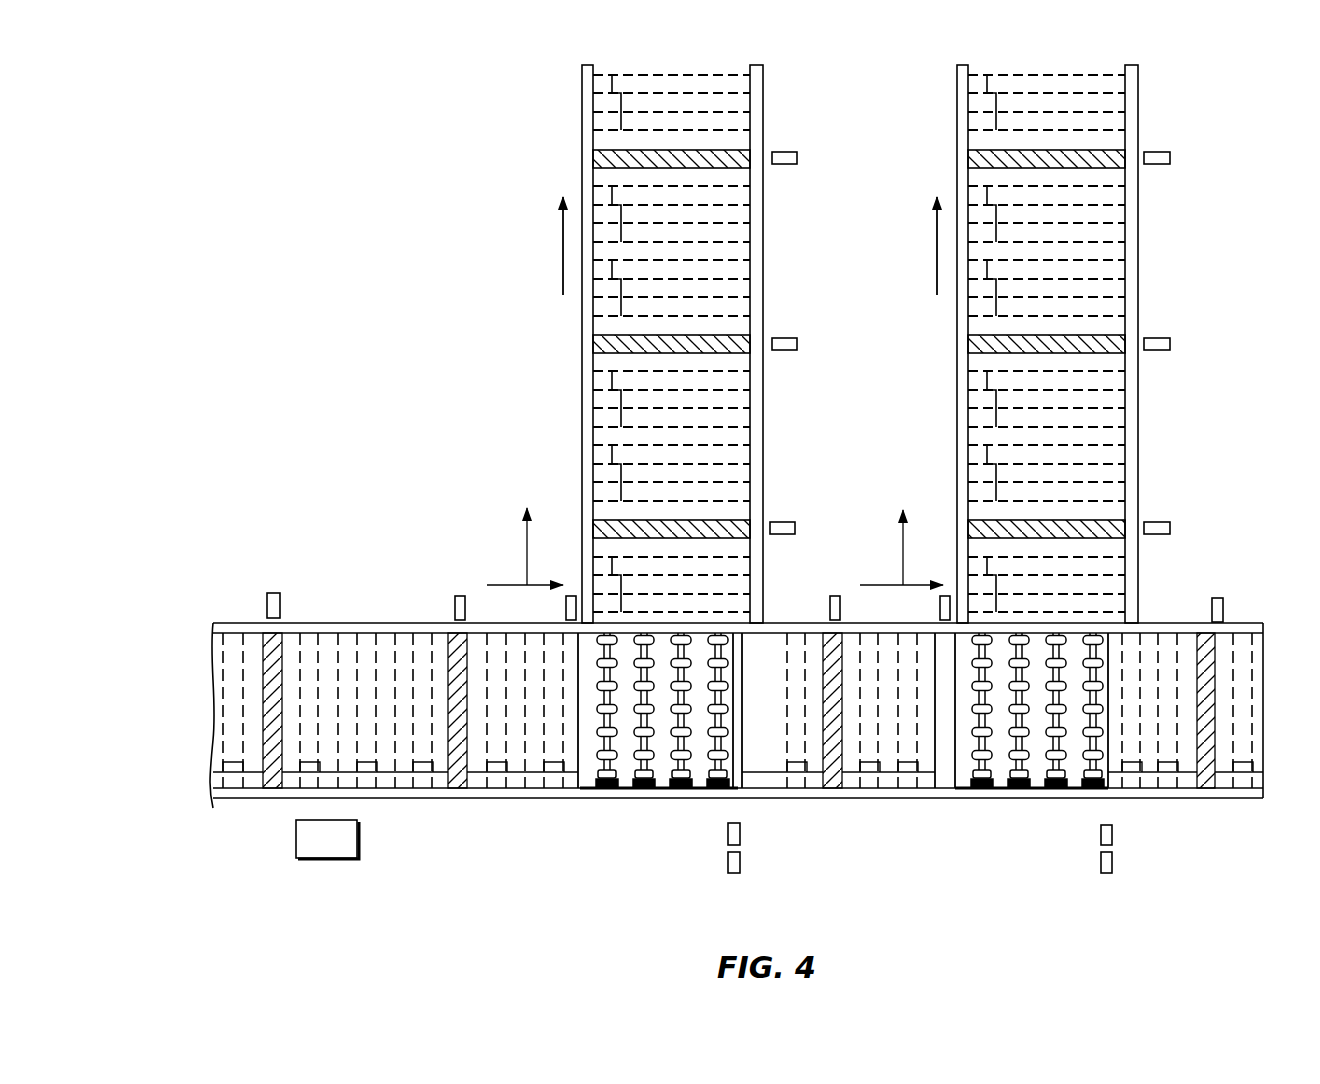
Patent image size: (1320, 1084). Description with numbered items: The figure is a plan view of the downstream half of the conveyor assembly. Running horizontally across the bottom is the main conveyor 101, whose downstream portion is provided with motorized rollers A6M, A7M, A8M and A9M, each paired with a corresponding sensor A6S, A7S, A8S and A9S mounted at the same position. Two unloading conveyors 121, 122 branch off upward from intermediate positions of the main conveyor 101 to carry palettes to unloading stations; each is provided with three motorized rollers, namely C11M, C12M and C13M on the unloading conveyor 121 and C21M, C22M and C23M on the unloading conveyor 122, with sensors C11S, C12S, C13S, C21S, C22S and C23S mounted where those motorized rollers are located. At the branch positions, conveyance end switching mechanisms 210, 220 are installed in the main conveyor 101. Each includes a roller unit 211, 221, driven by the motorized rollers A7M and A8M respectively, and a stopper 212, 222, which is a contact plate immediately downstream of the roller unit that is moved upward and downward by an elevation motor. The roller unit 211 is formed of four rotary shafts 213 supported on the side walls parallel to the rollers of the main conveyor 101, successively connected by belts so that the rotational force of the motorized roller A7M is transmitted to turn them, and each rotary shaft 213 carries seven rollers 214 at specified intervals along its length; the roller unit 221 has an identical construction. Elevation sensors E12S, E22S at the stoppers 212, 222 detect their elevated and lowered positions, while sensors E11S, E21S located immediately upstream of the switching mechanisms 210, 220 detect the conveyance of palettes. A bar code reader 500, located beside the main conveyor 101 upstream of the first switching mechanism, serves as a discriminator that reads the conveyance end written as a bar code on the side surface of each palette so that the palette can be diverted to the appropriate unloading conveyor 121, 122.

The main conveyor 101 is at (332, 620).
The unloading conveyor 121 is at (791, 297).
The unloading conveyor 122 is at (1169, 297).
The conveyance end switching mechanism 210 is at (666, 814).
The roller unit 211 is at (665, 785).
The stopper 212 is at (740, 770).
The rotary shaft 213 is at (601, 788).
The roller 214 is at (620, 792).
The conveyance end switching mechanism 220 is at (1027, 816).
The roller unit 221 is at (1037, 788).
The stopper 222 is at (1113, 775).
The bar code reader 500 is at (339, 848).
The sensor A6S is at (273, 593).
The motorized roller A6M is at (266, 636).
The sensor A7S is at (460, 596).
The motorized roller A7M is at (452, 636).
The sensor A8S is at (837, 596).
The motorized roller A8M is at (828, 636).
The sensor A9S is at (1218, 598).
The motorized roller A9M is at (1202, 636).
The sensor E11S is at (566, 608).
The sensor E21S is at (940, 608).
The elevation sensor E12S is at (741, 860).
The elevation sensor E22S is at (1114, 858).
The sensor C11S is at (795, 528).
The motorized roller C11M is at (738, 532).
The sensor C12S is at (797, 344).
The motorized roller C12M is at (743, 350).
The sensor C13S is at (797, 158).
The motorized roller C13M is at (743, 165).
The sensor C21S is at (1170, 528).
The motorized roller C21M is at (1122, 532).
The sensor C22S is at (1170, 344).
The motorized roller C22M is at (1118, 350).
The sensor C23S is at (1170, 158).
The motorized roller C23M is at (1118, 165).